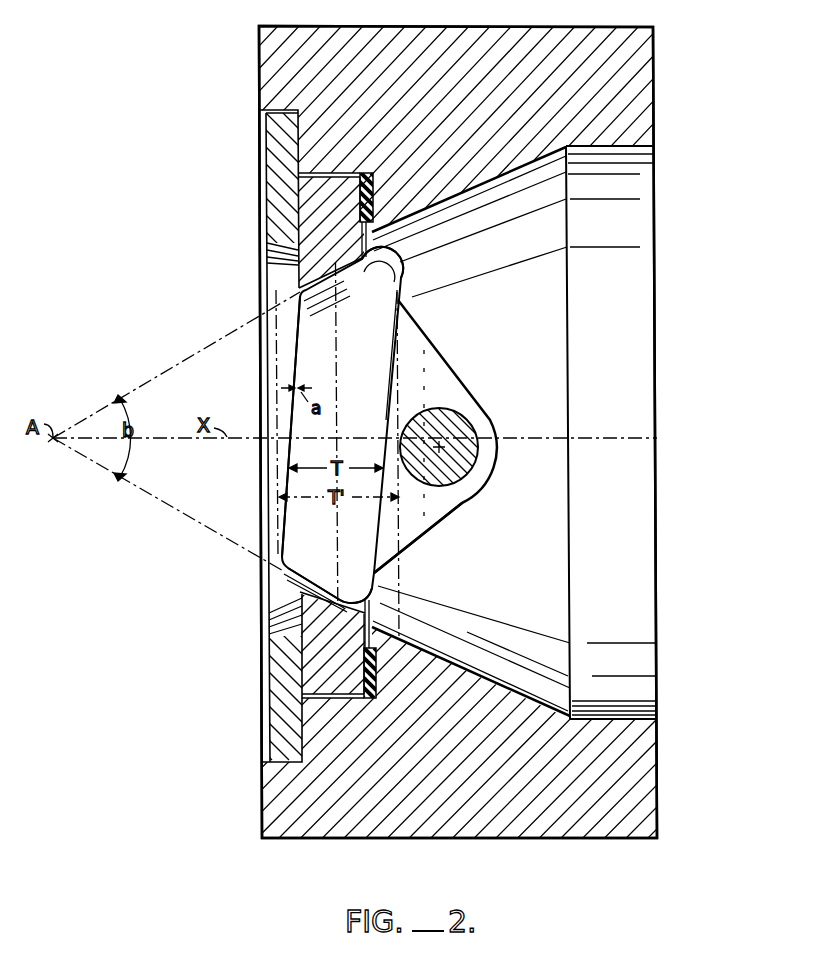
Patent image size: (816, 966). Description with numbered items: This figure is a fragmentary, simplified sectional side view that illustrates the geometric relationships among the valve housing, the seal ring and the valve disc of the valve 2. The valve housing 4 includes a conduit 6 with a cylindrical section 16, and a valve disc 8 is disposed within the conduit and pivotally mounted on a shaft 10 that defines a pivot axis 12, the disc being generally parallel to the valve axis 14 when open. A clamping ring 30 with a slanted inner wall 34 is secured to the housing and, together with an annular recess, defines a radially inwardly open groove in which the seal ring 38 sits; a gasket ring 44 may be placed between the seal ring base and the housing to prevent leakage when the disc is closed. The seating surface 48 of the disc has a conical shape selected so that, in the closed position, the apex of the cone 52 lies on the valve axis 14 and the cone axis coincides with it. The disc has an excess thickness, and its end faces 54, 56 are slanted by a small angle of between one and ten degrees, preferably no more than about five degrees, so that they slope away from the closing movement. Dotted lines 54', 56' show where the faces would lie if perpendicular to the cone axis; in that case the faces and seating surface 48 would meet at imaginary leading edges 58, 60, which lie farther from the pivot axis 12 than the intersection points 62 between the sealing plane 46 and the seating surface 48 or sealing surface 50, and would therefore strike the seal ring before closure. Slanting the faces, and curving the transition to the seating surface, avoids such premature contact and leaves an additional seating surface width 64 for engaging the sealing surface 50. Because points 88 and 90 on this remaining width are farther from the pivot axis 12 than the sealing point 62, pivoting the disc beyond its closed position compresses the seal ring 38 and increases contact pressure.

The valve 2 is at (724, 93).
The valve housing 4 is at (640, 78).
The conduit 6 is at (640, 270).
The valve disc 8 is at (408, 272).
The shaft 10 is at (463, 425).
The pivot axis 12 is at (442, 450).
The valve axis 14 is at (657, 438).
The cylindrical section 16 is at (626, 718).
The clamping ring 30 is at (282, 215).
The slanted inner wall 34 is at (288, 253).
The seal ring 38 is at (310, 195).
The gasket ring 44 is at (373, 182).
The sealing plane 46 is at (337, 427).
The seating surface 48 is at (400, 305).
The sealing surface 50 is at (378, 598).
The cone 52 is at (190, 522).
The disc end face 54 is at (260, 427).
The perpendicular disc face 54' is at (248, 422).
The disc end face 56 is at (435, 432).
The perpendicular disc face 56' is at (418, 538).
The leading edge 58 is at (276, 305).
The leading edge 60 is at (402, 638).
The intersection point 62 is at (330, 290).
The additional seating surface width 64 is at (348, 288).
The point on remaining seating surface width 88 is at (300, 590).
The point on remaining seating surface width 90 is at (354, 274).